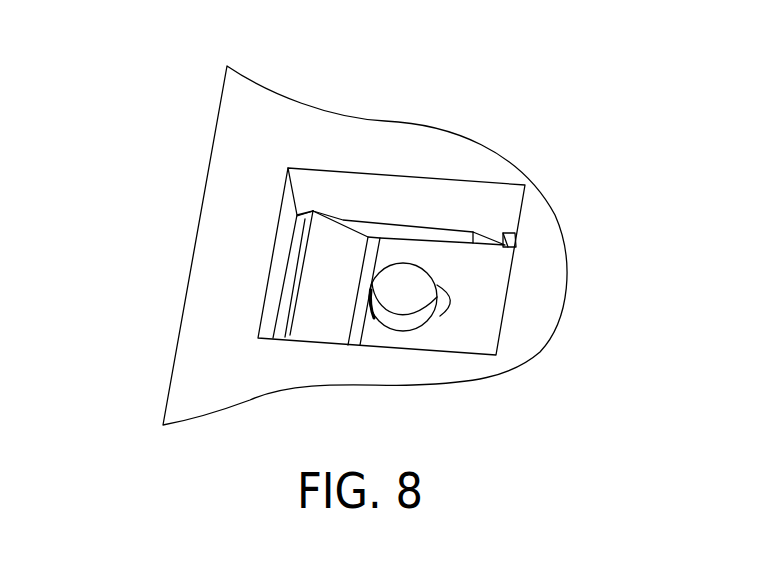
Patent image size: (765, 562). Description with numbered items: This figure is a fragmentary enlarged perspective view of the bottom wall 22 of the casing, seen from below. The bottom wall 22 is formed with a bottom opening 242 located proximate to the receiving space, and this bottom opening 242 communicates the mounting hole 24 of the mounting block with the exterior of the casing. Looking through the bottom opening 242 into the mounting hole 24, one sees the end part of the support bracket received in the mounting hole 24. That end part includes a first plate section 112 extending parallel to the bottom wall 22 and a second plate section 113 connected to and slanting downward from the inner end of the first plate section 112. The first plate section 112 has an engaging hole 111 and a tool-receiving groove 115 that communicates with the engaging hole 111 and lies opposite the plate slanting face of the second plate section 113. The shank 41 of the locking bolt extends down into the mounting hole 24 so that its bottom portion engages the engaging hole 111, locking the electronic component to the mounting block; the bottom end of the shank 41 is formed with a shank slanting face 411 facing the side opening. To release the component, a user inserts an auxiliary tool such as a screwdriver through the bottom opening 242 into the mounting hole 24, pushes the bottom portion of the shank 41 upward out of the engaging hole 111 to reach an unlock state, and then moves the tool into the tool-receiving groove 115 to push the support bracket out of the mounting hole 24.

The bottom wall 22 is at (163, 265).
The mounting hole 24 is at (357, 206).
The shank 41 is at (395, 262).
The shank slanting face 411 is at (412, 290).
The second plate section 113 is at (325, 259).
The tool-receiving groove 115 is at (438, 300).
The first plate section 112 is at (482, 308).
The engaging hole 111 is at (403, 331).
The bottom opening 242 is at (260, 296).